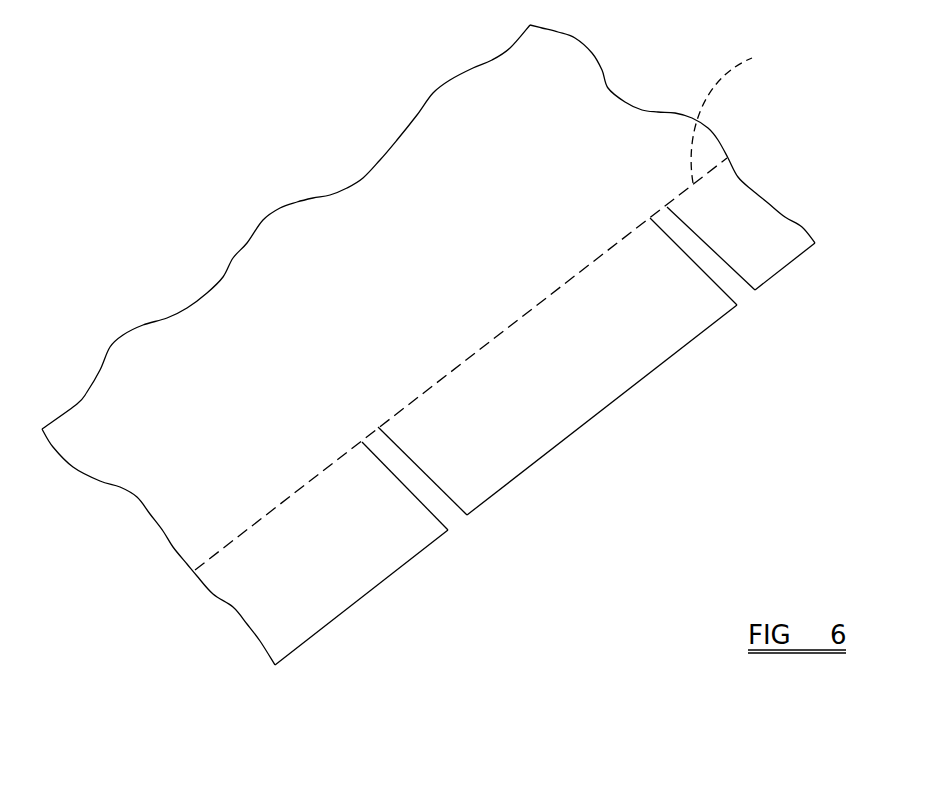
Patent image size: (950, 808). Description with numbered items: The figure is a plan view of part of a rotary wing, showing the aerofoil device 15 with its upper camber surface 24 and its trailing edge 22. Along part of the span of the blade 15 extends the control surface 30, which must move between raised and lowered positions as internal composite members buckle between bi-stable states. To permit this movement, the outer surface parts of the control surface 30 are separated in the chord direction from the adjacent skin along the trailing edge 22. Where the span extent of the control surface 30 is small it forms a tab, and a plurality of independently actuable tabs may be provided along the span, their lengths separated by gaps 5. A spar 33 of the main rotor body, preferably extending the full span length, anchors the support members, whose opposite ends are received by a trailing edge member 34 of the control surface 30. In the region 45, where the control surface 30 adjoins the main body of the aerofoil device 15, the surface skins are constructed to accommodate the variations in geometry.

The gap 5 is at (457, 518).
The aerofoil device 15 is at (200, 616).
The trailing edge 22 is at (787, 270).
The upper camber surface 24 is at (428, 345).
The control surface 30 is at (602, 443).
The spar 33 is at (752, 58).
The trailing edge member 34 is at (613, 407).
The region 45 is at (461, 364).